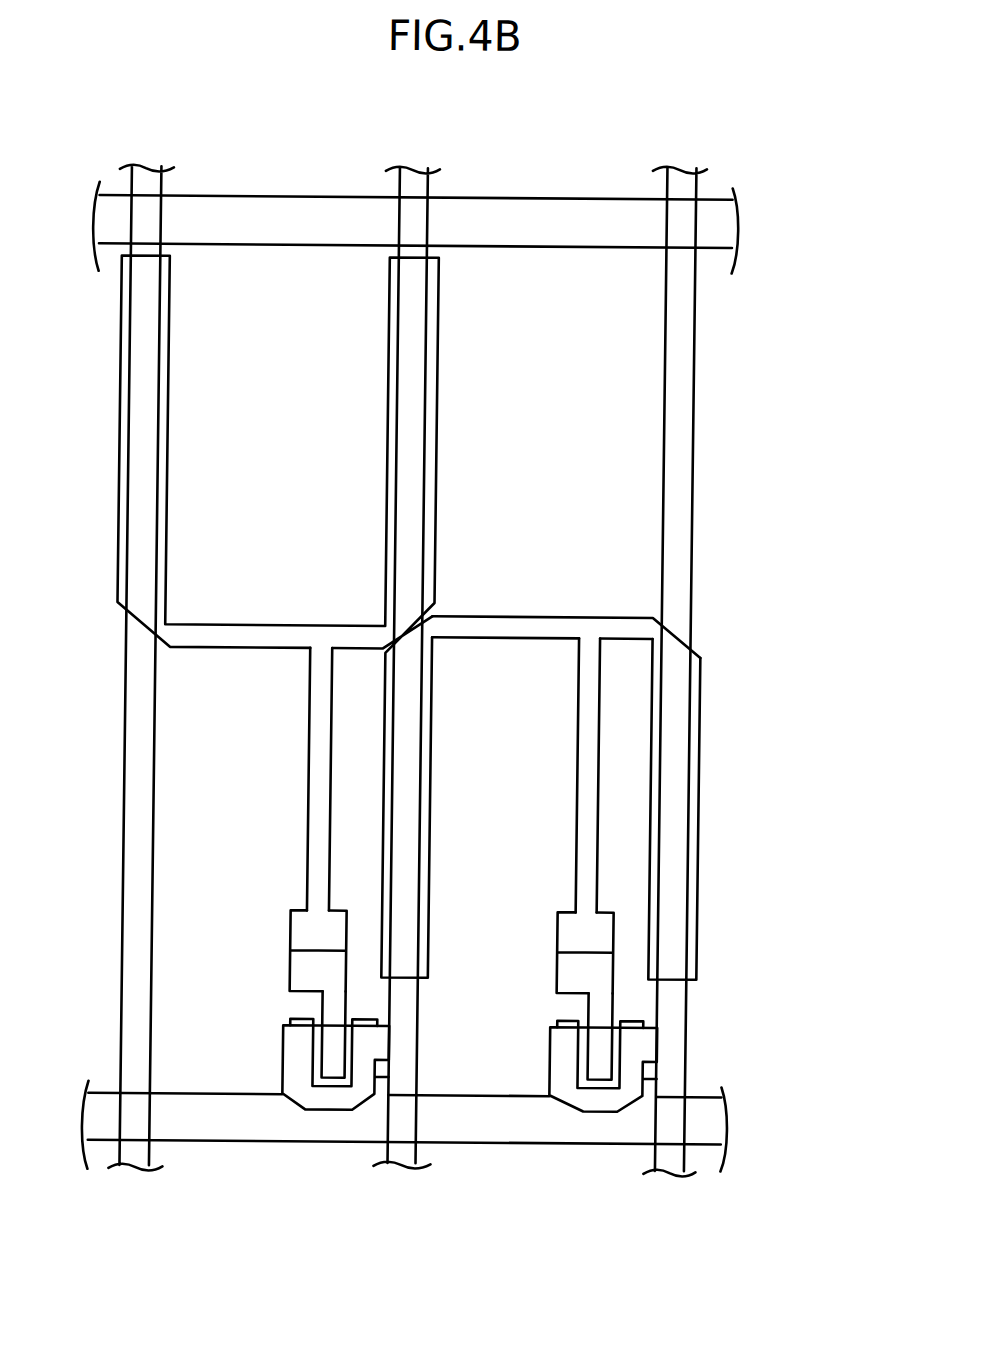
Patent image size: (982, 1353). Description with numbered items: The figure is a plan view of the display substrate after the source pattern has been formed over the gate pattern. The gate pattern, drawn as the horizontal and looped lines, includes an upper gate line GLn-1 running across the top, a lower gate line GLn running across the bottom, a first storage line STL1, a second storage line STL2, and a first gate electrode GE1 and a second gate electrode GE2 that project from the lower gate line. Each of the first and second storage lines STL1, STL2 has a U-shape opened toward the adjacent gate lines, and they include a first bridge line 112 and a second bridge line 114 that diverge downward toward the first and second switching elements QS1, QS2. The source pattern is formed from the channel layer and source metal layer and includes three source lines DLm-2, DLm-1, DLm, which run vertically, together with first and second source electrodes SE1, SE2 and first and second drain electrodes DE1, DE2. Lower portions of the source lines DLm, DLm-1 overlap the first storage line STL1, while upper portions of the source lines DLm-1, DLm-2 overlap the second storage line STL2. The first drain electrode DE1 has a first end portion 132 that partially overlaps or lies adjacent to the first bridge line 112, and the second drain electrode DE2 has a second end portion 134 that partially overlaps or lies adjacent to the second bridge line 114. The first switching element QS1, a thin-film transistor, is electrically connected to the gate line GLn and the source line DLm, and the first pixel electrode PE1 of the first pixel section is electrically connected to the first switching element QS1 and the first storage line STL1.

The (n−1)th gate line GLn-1 is at (738, 222).
The (n)th gate line GLn is at (736, 1120).
The (m−2)th source line DLm-2 is at (150, 1159).
The (m−1)th source line DLm-1 is at (416, 1159).
The (m)th source line DLm is at (682, 1160).
The first pixel electrode PE1 is at (680, 495).
The first storage line STL1 is at (536, 618).
The second storage line STL2 is at (243, 633).
The first bridge line 112 is at (587, 820).
The second bridge line 114 is at (318, 822).
The first end portion 132 is at (569, 965).
The second end portion 134 is at (302, 966).
The first gate electrode GE1 is at (563, 1069).
The first source electrode SE1 is at (599, 1096).
The first drain electrode DE1 is at (613, 1068).
The second gate electrode GE2 is at (296, 1068).
The second source electrode SE2 is at (331, 1095).
The second drain electrode DE2 is at (346, 1068).
The first switching element QS1 is at (577, 1139).
The second switching element QS2 is at (309, 1136).